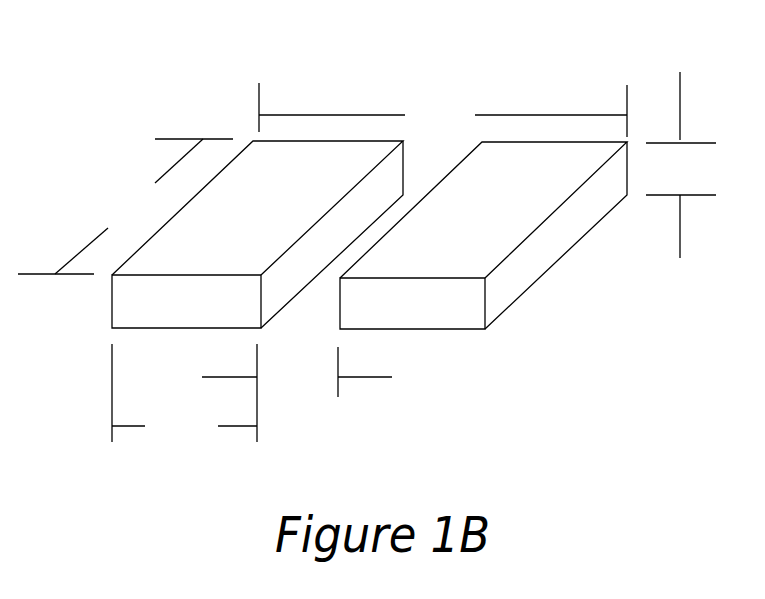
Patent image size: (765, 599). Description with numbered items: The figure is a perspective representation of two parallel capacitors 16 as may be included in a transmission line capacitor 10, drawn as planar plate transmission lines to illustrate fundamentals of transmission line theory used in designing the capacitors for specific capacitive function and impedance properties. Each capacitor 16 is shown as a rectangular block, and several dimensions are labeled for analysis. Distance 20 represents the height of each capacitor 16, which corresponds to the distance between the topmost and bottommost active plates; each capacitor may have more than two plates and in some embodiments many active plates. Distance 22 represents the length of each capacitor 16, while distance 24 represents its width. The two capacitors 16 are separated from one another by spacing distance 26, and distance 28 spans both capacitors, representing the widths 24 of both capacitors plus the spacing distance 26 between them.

The transmission line capacitor 10 is at (626, 73).
The parallel capacitor 16 is at (369, 235).
The height distance 20 is at (681, 165).
The length distance 22 is at (125, 206).
The width distance 24 is at (184, 393).
The spacing distance 26 is at (297, 372).
The combined width distance 28 is at (443, 110).